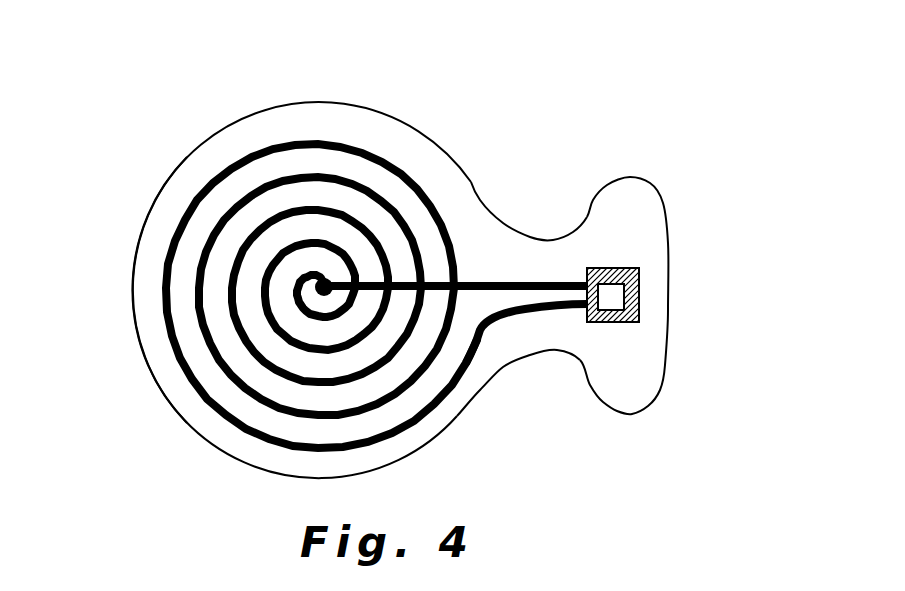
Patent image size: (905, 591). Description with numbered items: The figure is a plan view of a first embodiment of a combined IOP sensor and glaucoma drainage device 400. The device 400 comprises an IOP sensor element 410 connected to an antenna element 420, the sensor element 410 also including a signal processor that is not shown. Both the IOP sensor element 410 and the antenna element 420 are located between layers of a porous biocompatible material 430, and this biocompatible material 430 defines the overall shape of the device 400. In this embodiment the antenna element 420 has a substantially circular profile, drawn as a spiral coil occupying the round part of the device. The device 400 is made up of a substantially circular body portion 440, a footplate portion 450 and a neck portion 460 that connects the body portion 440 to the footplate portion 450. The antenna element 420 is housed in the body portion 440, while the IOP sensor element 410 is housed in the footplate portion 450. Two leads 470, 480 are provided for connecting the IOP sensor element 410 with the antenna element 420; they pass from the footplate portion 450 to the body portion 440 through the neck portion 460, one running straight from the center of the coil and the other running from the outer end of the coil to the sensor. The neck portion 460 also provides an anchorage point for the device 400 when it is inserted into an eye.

The combined IOP sensor and glaucoma drainage device 400 is at (590, 131).
The IOP sensor element 410 is at (639, 275).
The antenna element 420 is at (403, 432).
The porous biocompatible material 430 is at (167, 210).
The body portion 440 is at (334, 80).
The footplate portion 450 is at (662, 422).
The neck portion 460 is at (571, 386).
The lead 470 is at (485, 280).
The lead 480 is at (490, 360).